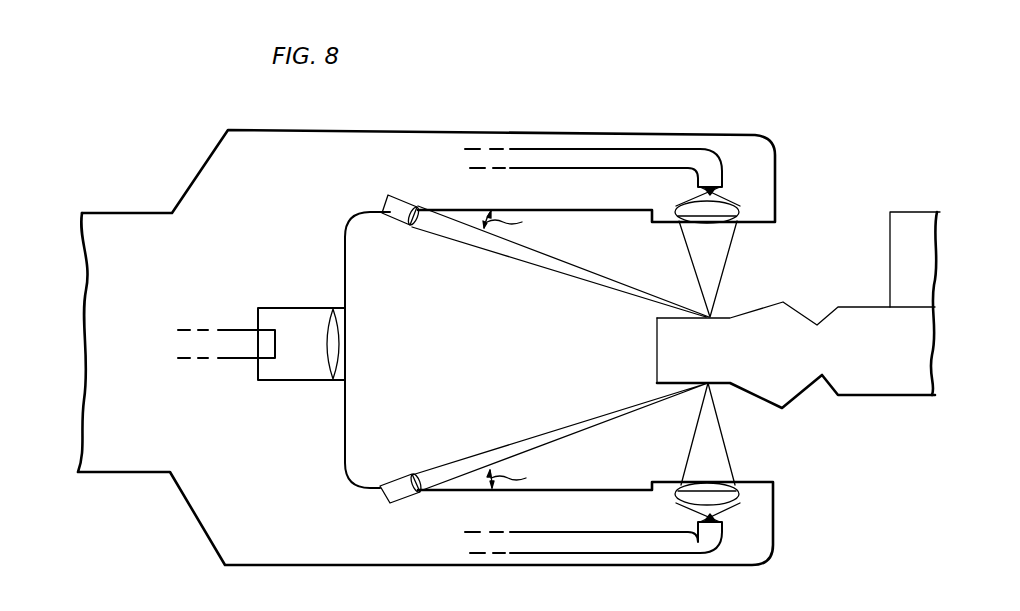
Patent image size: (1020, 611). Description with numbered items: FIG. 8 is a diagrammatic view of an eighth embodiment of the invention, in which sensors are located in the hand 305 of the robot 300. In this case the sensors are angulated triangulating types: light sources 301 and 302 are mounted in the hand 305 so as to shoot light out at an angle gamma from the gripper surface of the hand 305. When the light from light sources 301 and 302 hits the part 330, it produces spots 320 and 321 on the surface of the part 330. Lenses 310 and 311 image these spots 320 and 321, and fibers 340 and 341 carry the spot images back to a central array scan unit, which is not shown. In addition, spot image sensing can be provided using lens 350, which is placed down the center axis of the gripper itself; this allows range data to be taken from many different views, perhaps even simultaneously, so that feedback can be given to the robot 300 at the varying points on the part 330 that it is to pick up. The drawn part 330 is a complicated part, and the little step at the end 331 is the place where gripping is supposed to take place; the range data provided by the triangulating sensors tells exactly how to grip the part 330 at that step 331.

The robot 300 is at (726, 100).
The hand 305 is at (390, 128).
The fiber 340 is at (722, 172).
The fiber 341 is at (722, 533).
The lens 310 is at (737, 215).
The lens 311 is at (737, 491).
The light source 301 is at (403, 215).
The light source 302 is at (400, 487).
The lens 350 is at (342, 358).
The spot 320 is at (715, 318).
The spot 321 is at (713, 386).
The part 330 is at (752, 329).
The step at the end 331 is at (655, 381).